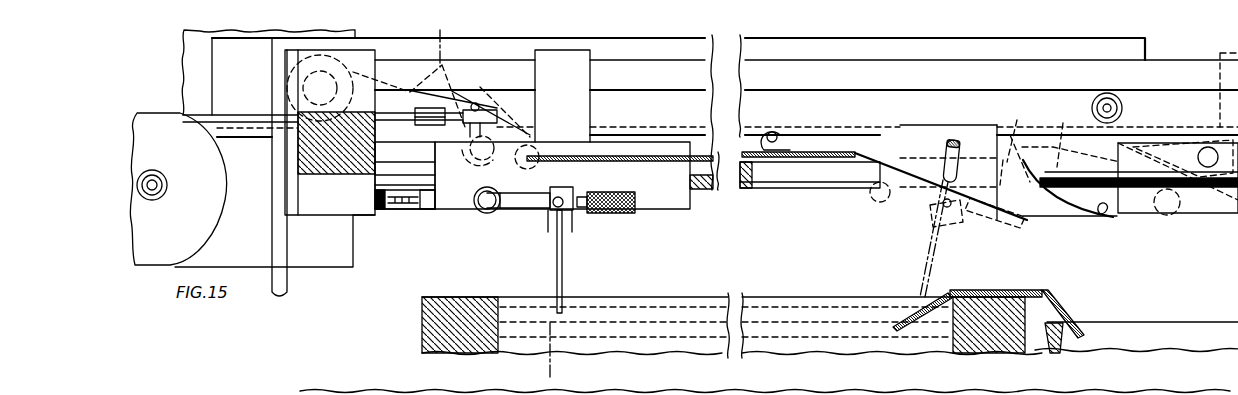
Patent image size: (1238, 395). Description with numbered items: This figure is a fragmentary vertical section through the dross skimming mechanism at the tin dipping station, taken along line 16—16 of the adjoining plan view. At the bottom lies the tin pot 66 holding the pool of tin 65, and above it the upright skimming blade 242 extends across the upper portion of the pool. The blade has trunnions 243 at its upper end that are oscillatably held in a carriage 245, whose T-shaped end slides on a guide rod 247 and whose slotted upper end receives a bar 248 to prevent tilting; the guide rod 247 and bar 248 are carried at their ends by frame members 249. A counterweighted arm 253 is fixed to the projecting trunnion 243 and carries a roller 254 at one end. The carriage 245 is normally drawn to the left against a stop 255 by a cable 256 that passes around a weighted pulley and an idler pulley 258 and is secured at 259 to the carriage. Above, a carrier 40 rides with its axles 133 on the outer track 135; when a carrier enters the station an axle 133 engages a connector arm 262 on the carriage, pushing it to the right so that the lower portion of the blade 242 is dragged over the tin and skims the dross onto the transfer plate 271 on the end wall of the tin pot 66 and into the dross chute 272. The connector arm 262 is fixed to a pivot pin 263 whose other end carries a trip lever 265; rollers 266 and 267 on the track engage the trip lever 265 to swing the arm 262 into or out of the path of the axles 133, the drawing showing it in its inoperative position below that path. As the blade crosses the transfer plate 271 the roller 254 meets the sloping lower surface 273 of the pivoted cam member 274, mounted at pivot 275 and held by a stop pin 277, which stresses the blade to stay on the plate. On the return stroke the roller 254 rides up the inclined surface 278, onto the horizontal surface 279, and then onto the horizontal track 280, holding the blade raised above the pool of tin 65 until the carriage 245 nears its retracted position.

The section line 16 is at (438, 45).
The carrier 40 is at (358, 263).
The pool of tin 65 is at (752, 347).
The tin pot 66 is at (436, 392).
The axle 133 is at (288, 88).
The outer track 135 is at (747, 55).
The skimming blade 242 is at (563, 268).
The trunnion 243 is at (550, 212).
The carriage 245 is at (666, 210).
The guide rod 247 is at (708, 192).
The bar 248 is at (1160, 67).
The frame member 249 is at (352, 174).
The counterweighted arm 253 is at (516, 212).
The roller 254 is at (480, 212).
The stop 255 is at (430, 210).
The cable 256 is at (186, 113).
The idler pulley 258 is at (156, 244).
The cable attachment point 259 is at (500, 109).
The connector arm 262 is at (446, 62).
The pivot pin 263 is at (494, 160).
The trip lever 265 is at (472, 102).
The roller 266 is at (472, 160).
The roller 267 is at (1112, 95).
The transfer plate 271 is at (1000, 292).
The dross chute 272 is at (1166, 336).
The sloping lower surface 273 is at (870, 198).
The cam member 274 is at (926, 128).
The pivot 275 is at (775, 132).
The stop pin 277 is at (957, 140).
The inclined surface 278 is at (1098, 220).
The horizontal surface 279 is at (1017, 145).
The horizontal track 280 is at (648, 152).